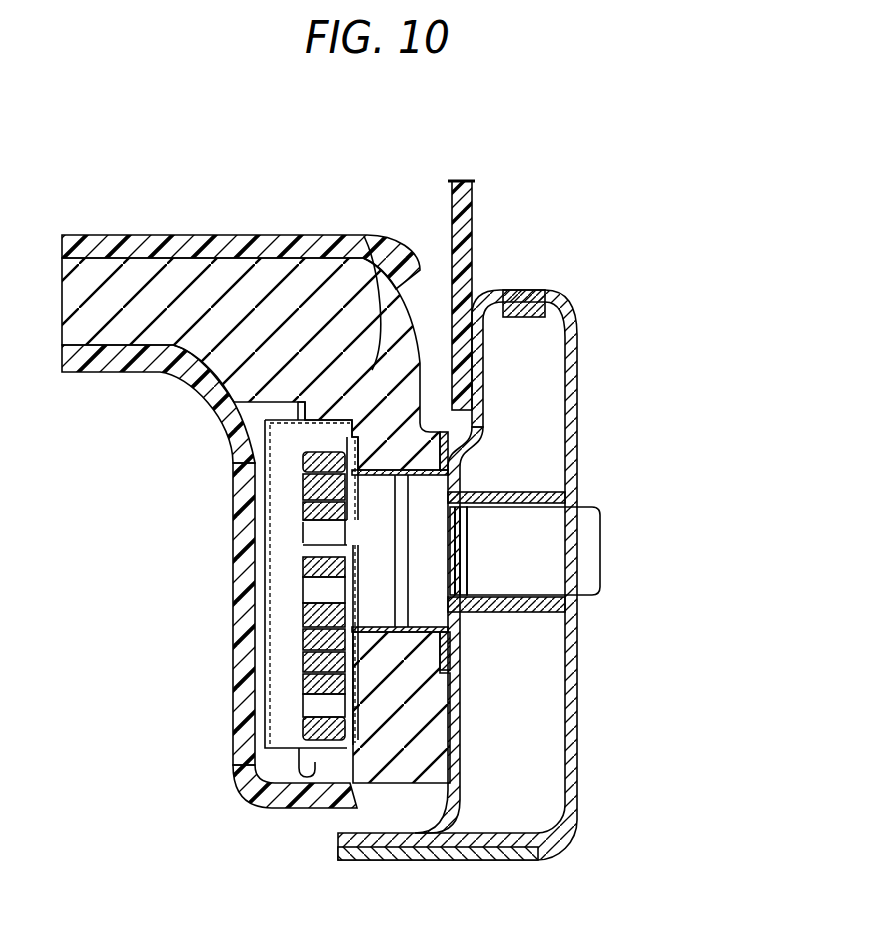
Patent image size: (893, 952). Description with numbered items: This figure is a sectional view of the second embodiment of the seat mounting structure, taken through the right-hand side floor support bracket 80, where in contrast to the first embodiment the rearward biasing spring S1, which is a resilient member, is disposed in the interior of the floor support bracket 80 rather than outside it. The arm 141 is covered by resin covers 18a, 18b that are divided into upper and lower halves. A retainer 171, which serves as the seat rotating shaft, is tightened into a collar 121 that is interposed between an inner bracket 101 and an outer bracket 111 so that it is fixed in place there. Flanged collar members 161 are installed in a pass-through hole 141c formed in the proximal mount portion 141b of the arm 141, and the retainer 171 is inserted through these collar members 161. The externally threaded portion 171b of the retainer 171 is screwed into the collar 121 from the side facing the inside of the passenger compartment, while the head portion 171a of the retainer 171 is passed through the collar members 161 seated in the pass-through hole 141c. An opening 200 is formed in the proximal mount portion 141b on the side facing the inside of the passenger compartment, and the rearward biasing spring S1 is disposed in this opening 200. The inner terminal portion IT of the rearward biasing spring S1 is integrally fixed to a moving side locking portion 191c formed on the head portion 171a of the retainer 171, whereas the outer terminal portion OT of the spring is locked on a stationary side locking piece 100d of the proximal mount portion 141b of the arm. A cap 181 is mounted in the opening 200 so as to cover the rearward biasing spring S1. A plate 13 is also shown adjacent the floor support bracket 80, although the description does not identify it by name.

The cover 18a is at (148, 248).
The cover 18b is at (107, 355).
The arm 141 is at (220, 280).
The proximal mount portion 141b is at (366, 272).
The pass-through hole 141c is at (303, 500).
The partition plate 13 is at (472, 212).
The floor support bracket 80 is at (548, 247).
The inner bracket 101 is at (485, 378).
The outer bracket 111 is at (578, 403).
The collar 121 is at (533, 612).
The flanged collar member 161 is at (368, 640).
The retainer 171 is at (552, 587).
The head portion 171a is at (387, 608).
The externally threaded portion 171b is at (545, 552).
The cap 181 is at (247, 652).
The moving side locking portion 191c is at (318, 533).
The opening 200 is at (243, 783).
The stationary side locking piece 100d is at (313, 709).
The rearward biasing spring S1 is at (303, 466).
The inner terminal portion IT is at (310, 548).
The outer terminal portion OT is at (340, 745).